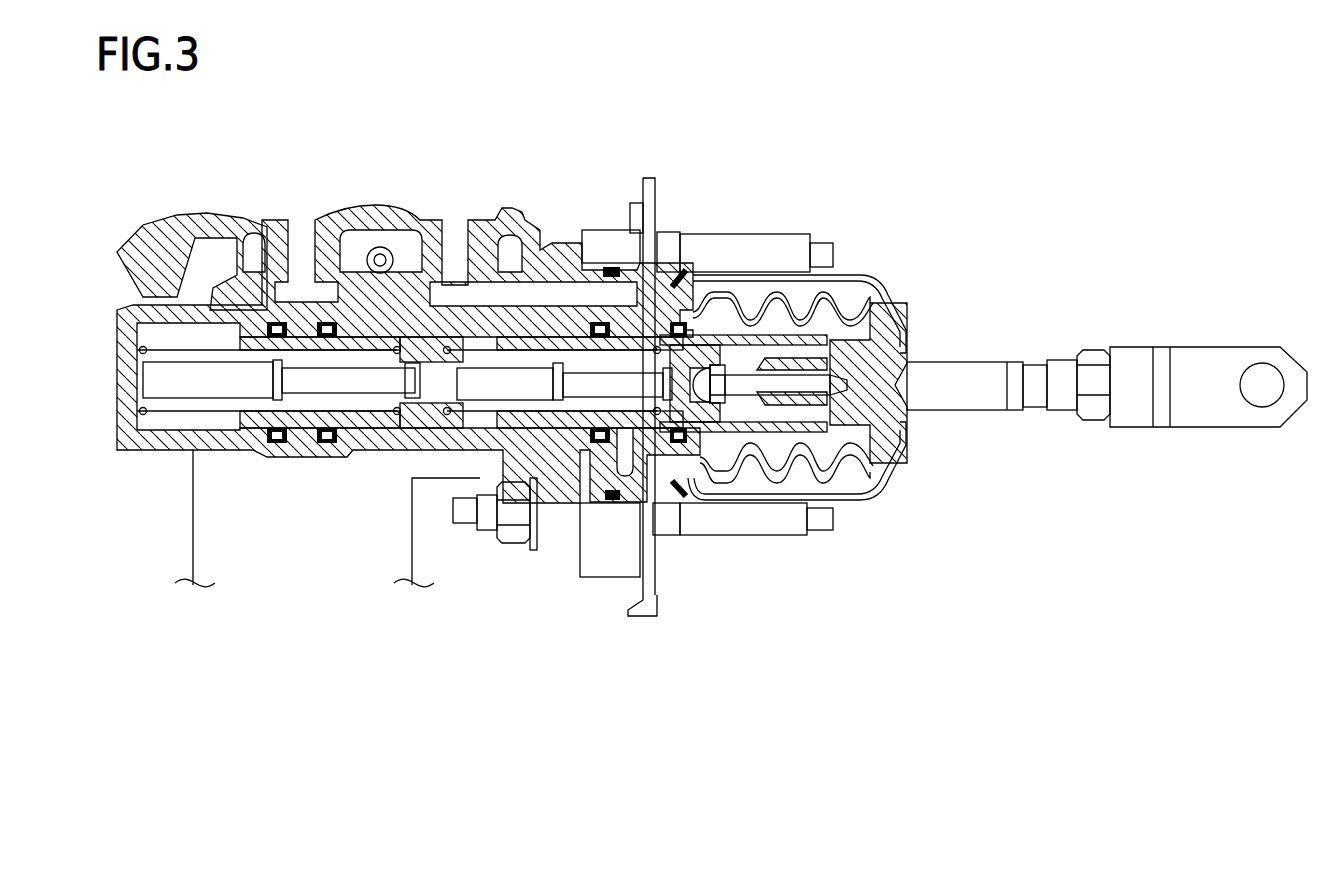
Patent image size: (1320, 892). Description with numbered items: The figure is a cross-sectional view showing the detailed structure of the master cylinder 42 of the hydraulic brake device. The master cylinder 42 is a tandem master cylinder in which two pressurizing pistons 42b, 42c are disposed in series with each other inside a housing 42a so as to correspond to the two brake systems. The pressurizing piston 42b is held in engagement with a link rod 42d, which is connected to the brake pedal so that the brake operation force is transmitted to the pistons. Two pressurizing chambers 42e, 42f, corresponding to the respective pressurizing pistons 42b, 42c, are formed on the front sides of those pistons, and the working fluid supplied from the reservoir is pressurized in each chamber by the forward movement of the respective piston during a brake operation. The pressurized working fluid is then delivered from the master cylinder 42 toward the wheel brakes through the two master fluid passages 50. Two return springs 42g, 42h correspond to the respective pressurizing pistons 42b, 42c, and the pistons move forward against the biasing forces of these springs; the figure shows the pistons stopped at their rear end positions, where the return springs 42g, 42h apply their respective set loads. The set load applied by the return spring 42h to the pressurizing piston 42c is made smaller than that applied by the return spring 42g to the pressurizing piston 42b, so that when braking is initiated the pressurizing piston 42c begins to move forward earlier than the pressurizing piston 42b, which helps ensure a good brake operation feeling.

The master cylinder 42 is at (824, 102).
The housing 42a is at (413, 283).
The pressurizing piston 42b is at (697, 420).
The pressurizing piston 42c is at (395, 428).
The link rod 42d is at (973, 400).
The pressurizing chamber 42e is at (573, 433).
The pressurizing chamber 42f is at (303, 395).
The return spring 42g is at (557, 357).
The return spring 42h is at (207, 350).
The master fluid passage 50 is at (195, 553).